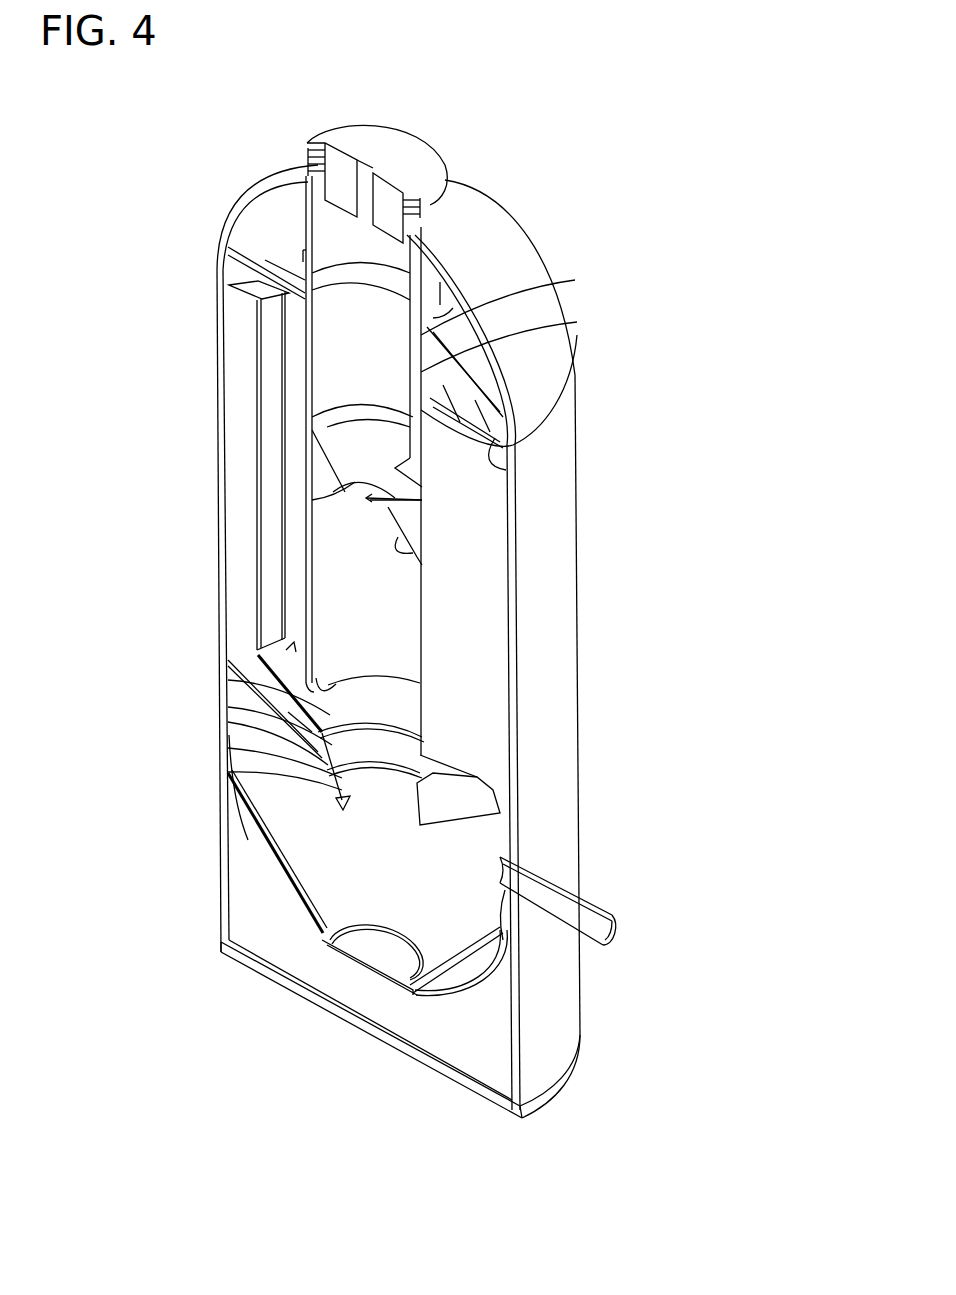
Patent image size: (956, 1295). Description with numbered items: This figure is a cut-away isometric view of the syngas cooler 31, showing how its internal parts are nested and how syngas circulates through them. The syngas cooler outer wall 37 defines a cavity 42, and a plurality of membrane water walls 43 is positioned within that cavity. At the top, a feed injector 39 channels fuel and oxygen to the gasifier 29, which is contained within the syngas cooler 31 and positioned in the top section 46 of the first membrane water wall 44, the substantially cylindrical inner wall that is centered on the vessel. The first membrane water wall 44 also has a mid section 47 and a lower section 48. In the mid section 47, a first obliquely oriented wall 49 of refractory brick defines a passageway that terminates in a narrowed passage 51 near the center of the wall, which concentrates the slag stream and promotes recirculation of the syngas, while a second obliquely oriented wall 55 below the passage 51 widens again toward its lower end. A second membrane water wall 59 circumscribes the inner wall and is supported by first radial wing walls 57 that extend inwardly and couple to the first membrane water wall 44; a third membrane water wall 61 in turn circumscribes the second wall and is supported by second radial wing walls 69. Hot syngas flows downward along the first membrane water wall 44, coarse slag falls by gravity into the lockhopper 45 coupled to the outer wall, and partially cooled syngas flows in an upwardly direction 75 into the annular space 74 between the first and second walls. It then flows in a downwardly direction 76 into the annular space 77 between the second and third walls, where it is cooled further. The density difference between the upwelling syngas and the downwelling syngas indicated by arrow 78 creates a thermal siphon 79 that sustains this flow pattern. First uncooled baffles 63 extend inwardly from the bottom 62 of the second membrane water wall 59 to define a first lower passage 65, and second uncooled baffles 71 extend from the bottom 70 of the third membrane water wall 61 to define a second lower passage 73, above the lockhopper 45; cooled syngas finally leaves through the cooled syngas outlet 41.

The gasifier 29 is at (577, 322).
The syngas cooler 31 is at (566, 184).
The syngas cooler outer wall 37 is at (549, 616).
The feed injector 39 is at (383, 167).
The cooled syngas outlet 41 is at (607, 932).
The cavity 42 is at (478, 668).
The membrane water walls 43 is at (225, 290).
The first membrane water wall 44 is at (300, 445).
The lockhopper 45 is at (308, 1030).
The top section 46 is at (362, 465).
The mid section 47 is at (382, 511).
The lower section 48 is at (374, 660).
The first obliquely oriented wall 49 is at (305, 478).
The passage 51 is at (422, 502).
The second obliquely oriented wall 55 is at (413, 557).
The first radial wing walls 57 is at (282, 342).
The second membrane water wall 59 is at (257, 357).
The third membrane water wall 61 is at (228, 408).
The bottom of second membrane water wall 62 is at (247, 632).
The first uncooled baffles 63 is at (248, 722).
The first lower passage 65 is at (371, 710).
The second radial wing walls 69 is at (508, 470).
The bottom of third membrane water wall 70 is at (225, 660).
The second uncooled baffles 71 is at (243, 752).
The second lower passage 73 is at (414, 862).
The annular space 74 is at (270, 548).
The upwardly direction 75 is at (285, 683).
The downwardly direction 76 is at (260, 283).
The annular space 77 is at (247, 347).
The arrow indicating downwelling syngas 78 is at (265, 806).
The thermal siphon 79 is at (240, 478).